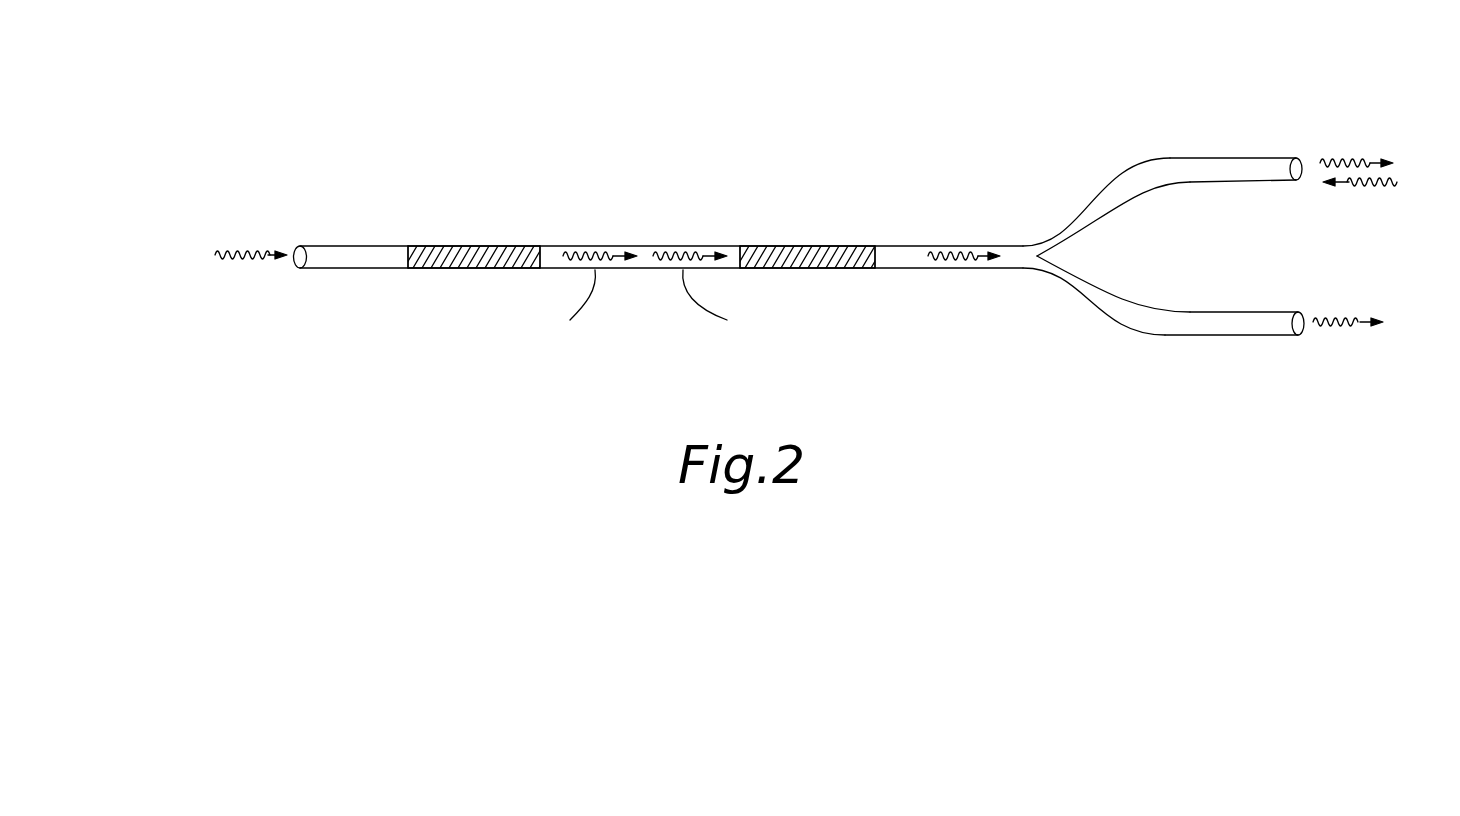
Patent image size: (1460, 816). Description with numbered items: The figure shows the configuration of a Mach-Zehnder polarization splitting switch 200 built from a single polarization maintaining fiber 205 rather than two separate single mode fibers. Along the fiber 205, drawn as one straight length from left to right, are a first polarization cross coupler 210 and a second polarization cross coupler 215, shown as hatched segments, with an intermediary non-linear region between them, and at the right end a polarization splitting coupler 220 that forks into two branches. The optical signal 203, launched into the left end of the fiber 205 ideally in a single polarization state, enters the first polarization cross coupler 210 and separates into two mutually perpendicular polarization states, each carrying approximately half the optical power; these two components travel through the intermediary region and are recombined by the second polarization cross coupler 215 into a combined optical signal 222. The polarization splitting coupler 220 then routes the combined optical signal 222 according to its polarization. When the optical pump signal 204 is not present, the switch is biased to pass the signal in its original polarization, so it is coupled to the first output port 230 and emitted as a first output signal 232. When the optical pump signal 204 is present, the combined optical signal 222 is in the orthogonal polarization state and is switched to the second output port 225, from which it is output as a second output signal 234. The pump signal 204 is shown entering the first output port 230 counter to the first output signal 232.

The Mach-Zehnder polarization splitting switch 200 is at (938, 93).
The optical signal 203 is at (250, 252).
The optical pump signal 204 is at (1380, 190).
The polarization maintaining fiber 205 is at (595, 248).
The first polarization cross coupler 210 is at (482, 245).
The second polarization cross coupler 215 is at (797, 245).
The polarization splitting coupler 220 is at (1030, 243).
The combined optical signal 222 is at (935, 262).
The second output port 225 is at (1253, 335).
The first output port 230 is at (1253, 158).
The first output signal 232 is at (1343, 160).
The second output signal 234 is at (1333, 317).